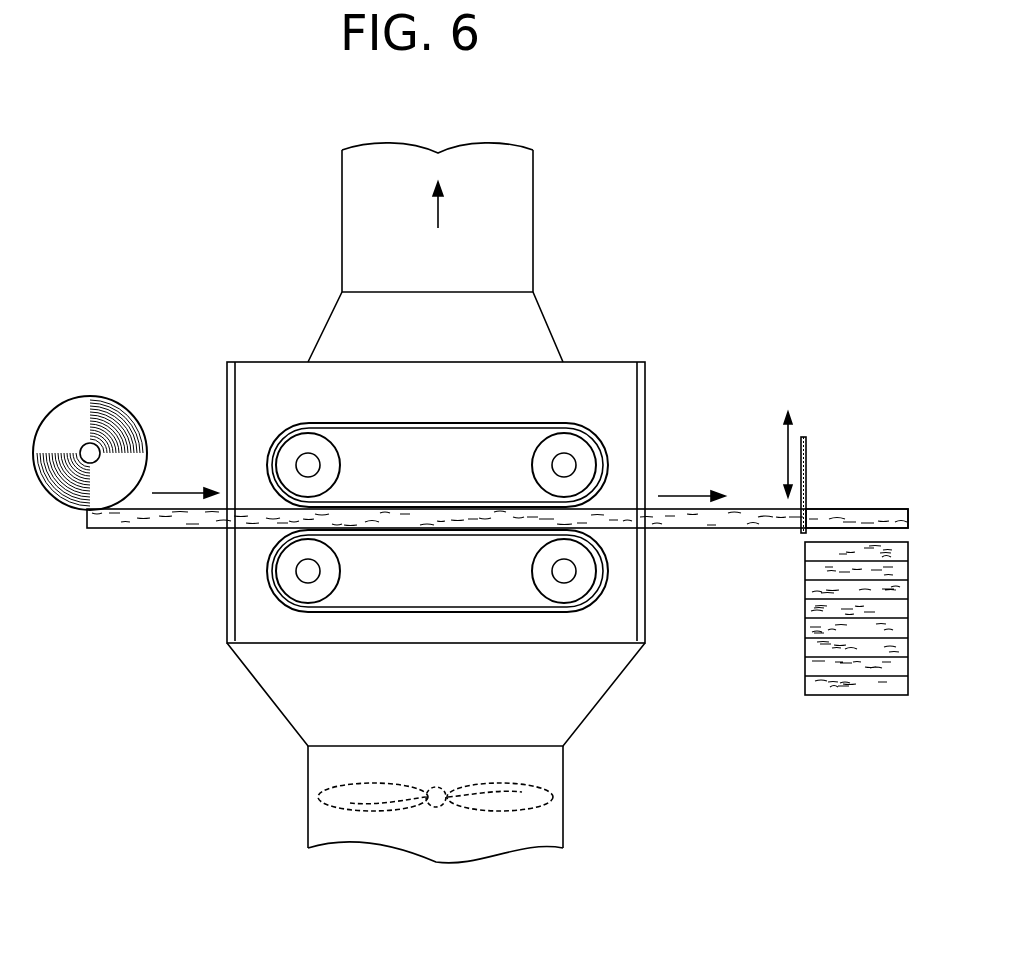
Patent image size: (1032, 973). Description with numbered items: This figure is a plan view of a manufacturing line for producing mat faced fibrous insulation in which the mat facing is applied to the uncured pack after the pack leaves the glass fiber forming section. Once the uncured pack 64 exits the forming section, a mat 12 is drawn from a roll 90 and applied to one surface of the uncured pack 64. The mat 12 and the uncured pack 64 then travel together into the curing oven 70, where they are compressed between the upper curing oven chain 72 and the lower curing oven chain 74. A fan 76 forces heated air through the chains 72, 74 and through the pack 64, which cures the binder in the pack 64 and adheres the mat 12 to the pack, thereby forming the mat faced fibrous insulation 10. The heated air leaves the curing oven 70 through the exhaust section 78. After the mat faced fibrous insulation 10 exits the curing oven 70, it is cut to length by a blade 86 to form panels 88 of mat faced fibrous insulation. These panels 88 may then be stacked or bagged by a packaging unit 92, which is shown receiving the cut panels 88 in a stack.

The mat faced fibrous insulation 10 is at (715, 465).
The mat 12 is at (140, 508).
The uncured pack 64 is at (158, 528).
The curing oven 70 is at (620, 322).
The upper curing oven chain 72 is at (457, 423).
The lower curing oven chain 74 is at (448, 538).
The fan 76 is at (380, 822).
The exhaust section 78 is at (456, 344).
The blade 86 is at (804, 437).
The panels 88 is at (865, 510).
The roll 90 is at (82, 396).
The packaging unit 92 is at (849, 712).